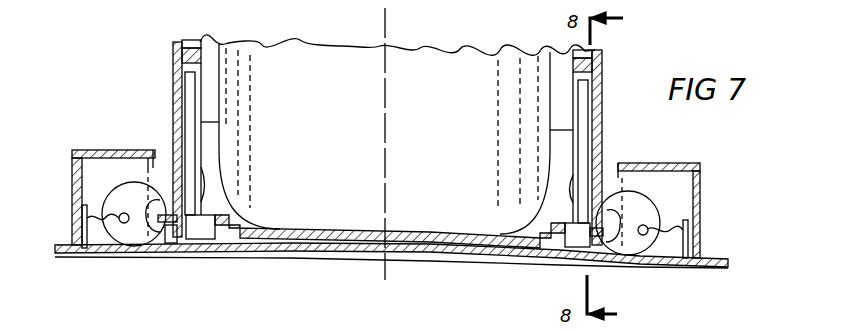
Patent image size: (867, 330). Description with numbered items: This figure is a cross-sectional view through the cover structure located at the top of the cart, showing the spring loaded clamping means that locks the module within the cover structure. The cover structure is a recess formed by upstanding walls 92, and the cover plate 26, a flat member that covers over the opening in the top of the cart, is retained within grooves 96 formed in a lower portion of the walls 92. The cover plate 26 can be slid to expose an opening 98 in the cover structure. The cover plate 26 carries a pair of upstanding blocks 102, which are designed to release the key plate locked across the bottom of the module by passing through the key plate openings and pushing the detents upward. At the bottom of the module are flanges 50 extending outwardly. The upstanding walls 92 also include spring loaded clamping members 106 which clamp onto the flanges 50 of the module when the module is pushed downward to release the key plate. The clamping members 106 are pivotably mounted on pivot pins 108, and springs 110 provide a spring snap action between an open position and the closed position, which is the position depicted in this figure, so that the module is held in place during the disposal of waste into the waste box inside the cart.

The cover plate 26 is at (312, 250).
The flanges 50 is at (145, 244).
The upstanding walls 92 is at (141, 154).
The grooves 96 is at (172, 246).
The opening 98 is at (222, 260).
The upstanding blocks 102 is at (200, 220).
The spring loaded clamping members 106 is at (130, 152).
The pivot pins 108 is at (138, 190).
The springs 110 is at (103, 242).